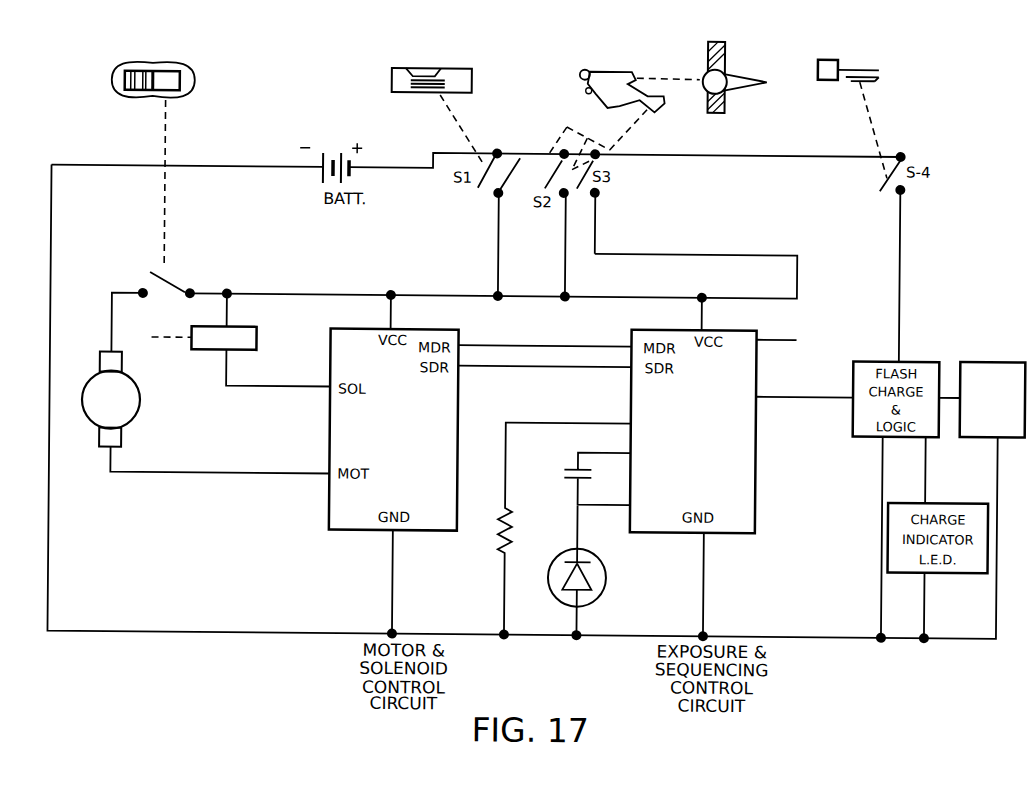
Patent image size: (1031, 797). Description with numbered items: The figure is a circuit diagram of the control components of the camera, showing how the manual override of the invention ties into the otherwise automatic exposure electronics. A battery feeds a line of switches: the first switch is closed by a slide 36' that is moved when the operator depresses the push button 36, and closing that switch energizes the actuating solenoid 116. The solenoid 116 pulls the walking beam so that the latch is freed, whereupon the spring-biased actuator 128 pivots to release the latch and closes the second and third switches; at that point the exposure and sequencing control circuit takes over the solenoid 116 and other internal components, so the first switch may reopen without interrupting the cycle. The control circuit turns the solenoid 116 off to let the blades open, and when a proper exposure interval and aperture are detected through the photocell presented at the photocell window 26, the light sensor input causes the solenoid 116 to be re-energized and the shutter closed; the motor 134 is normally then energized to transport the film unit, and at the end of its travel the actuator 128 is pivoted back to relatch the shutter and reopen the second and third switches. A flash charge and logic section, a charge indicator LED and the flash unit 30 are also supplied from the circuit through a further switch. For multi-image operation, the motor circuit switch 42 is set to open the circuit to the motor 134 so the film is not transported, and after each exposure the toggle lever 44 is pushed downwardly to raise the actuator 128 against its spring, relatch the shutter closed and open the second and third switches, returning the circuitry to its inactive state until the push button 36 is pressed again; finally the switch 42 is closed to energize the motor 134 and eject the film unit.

The motor circuit switch 42 is at (177, 79).
The slide 36' is at (441, 95).
The actuator 128 is at (610, 71).
The shutter latch positioning toggle lever 44 is at (745, 78).
The push button 36 is at (847, 103).
The flash unit 30 is at (983, 358).
The actuating solenoid 116 is at (242, 331).
The motor 134 is at (141, 400).
The photocell window 26 is at (592, 598).